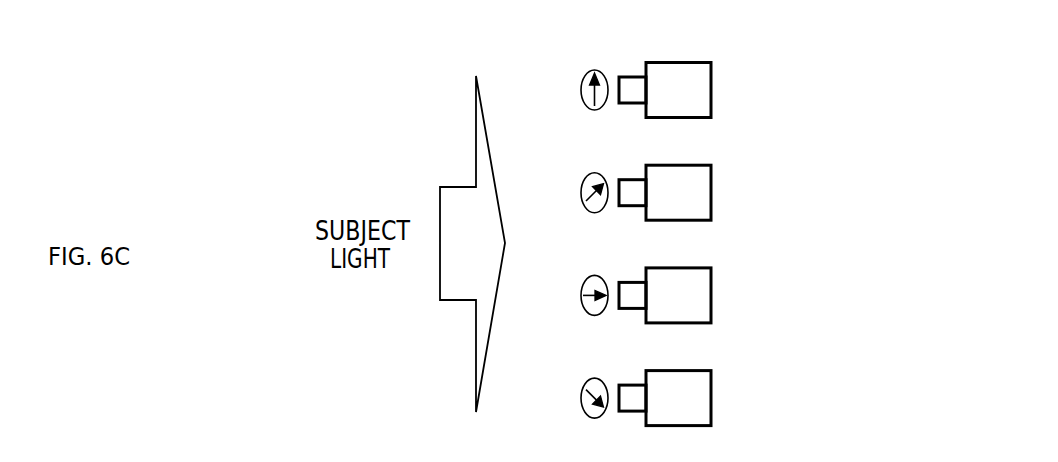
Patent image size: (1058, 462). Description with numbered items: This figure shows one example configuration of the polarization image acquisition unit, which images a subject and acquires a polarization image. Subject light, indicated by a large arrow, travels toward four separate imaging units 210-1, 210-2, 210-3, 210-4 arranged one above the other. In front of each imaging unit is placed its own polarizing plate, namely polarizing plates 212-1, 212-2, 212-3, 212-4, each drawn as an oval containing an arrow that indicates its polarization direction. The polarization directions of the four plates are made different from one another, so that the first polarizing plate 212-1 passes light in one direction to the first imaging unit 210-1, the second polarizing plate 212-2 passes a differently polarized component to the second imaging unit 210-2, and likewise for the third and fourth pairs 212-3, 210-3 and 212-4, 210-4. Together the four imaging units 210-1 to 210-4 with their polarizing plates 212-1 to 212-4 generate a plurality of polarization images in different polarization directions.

The imaging unit 210-1 is at (711, 78).
The imaging unit 210-2 is at (711, 181).
The imaging unit 210-3 is at (711, 283).
The imaging unit 210-4 is at (711, 386).
The polarizing plate 212-1 is at (622, 48).
The polarizing plate 212-2 is at (622, 151).
The polarizing plate 212-3 is at (622, 253).
The polarizing plate 212-4 is at (622, 356).